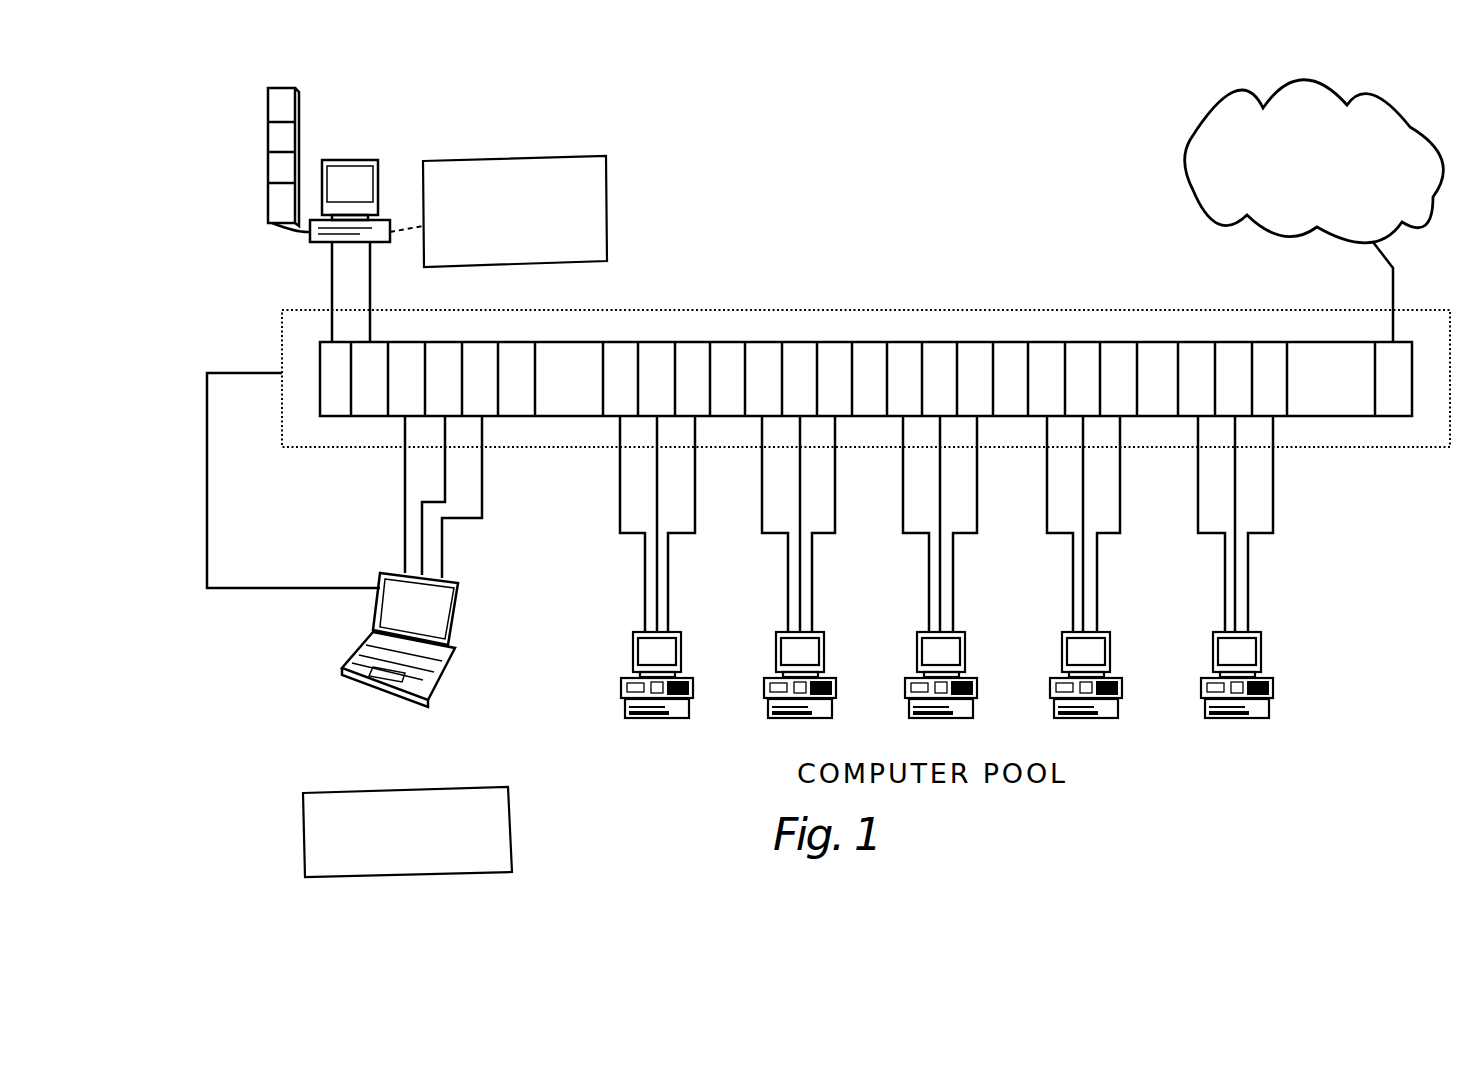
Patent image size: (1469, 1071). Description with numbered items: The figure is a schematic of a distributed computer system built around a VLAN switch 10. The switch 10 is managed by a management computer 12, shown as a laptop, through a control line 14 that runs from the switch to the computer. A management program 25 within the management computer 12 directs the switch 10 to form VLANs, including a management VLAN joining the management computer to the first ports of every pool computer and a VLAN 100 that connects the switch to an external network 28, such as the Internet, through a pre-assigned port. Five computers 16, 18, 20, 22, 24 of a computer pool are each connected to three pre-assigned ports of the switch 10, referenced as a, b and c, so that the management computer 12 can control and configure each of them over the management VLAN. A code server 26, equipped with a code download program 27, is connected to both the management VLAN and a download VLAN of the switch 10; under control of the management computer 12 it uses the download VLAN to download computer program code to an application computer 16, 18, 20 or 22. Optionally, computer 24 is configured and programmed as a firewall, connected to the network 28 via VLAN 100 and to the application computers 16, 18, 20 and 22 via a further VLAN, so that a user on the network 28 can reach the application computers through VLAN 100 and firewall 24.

The switch 10 is at (692, 310).
The management computer 12 is at (383, 691).
The control line 14 is at (207, 588).
The computer 16 is at (627, 705).
The computer 18 is at (768, 703).
The computer 20 is at (967, 635).
The computer 22 is at (1112, 637).
The computer 24 is at (1273, 688).
The management program 25 is at (512, 847).
The code server 26 is at (376, 170).
The code download program 27 is at (605, 212).
The network 28 is at (1190, 137).
The VLAN 100 is at (1393, 386).